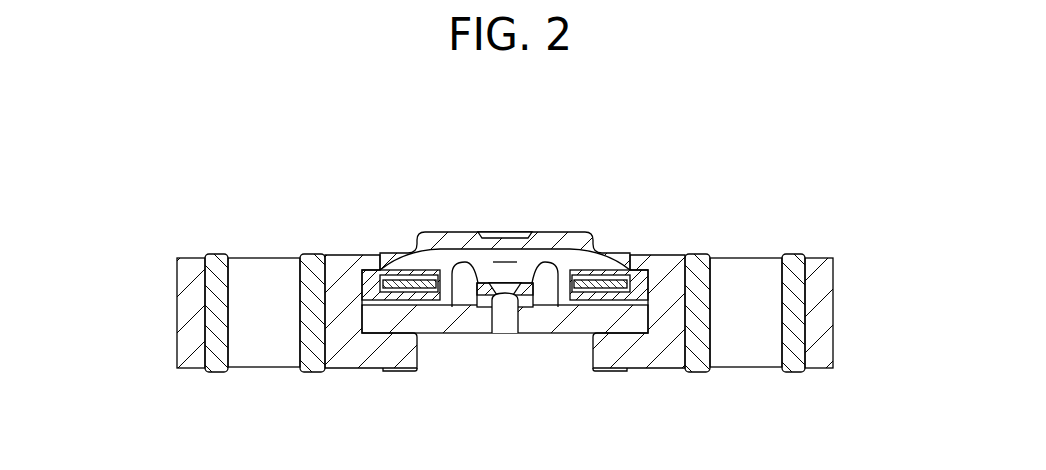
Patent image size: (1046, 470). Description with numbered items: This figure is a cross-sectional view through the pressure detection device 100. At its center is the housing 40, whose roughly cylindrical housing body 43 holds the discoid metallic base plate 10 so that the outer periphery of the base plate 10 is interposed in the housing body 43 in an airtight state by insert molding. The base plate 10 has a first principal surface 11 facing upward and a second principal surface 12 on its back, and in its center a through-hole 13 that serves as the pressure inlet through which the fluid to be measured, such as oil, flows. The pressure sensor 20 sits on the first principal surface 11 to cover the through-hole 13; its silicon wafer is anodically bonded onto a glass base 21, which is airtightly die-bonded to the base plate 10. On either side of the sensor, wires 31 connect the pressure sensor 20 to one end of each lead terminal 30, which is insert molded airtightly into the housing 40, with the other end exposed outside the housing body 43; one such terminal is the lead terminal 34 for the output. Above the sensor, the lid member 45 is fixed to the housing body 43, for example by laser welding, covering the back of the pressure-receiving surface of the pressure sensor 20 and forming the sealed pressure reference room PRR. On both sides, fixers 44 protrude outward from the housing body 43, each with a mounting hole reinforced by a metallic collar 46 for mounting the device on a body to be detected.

The pressure detection device 100 is at (797, 183).
The base plate 10 is at (413, 375).
The first principal surface 11 is at (445, 240).
The second principal surface 12 is at (476, 334).
The through-hole 13 is at (507, 333).
The pressure sensor 20 is at (512, 272).
The glass base 21 is at (568, 262).
The lead terminal 30 is at (363, 255).
The wire 31 is at (470, 262).
The lead terminal for an output 34 is at (486, 224).
The housing 40 is at (645, 378).
The housing body 43 is at (608, 367).
The fixer 44 is at (190, 347).
The lid member 45 is at (407, 244).
The metallic collar 46 is at (213, 290).
The pressure reference room PRR is at (495, 262).